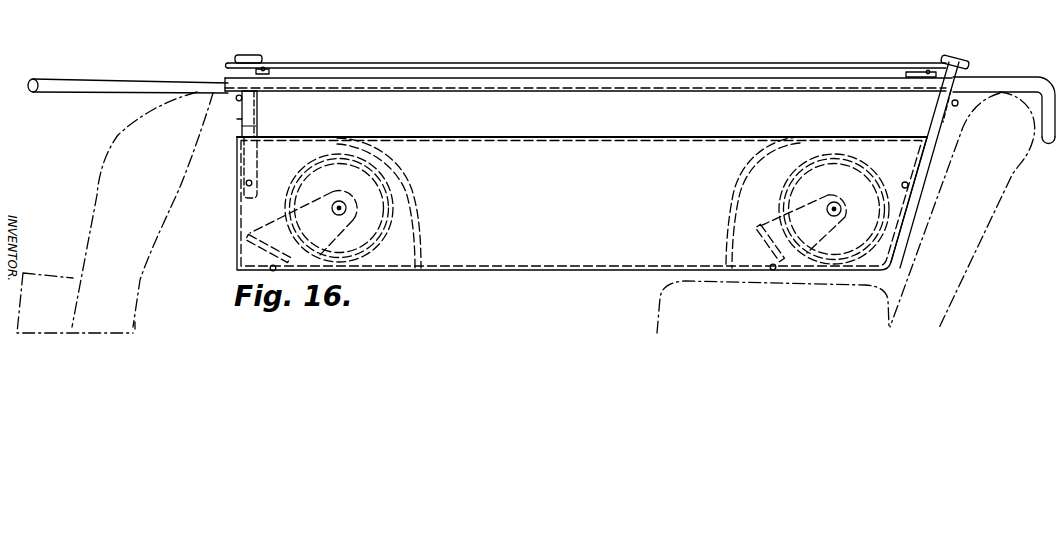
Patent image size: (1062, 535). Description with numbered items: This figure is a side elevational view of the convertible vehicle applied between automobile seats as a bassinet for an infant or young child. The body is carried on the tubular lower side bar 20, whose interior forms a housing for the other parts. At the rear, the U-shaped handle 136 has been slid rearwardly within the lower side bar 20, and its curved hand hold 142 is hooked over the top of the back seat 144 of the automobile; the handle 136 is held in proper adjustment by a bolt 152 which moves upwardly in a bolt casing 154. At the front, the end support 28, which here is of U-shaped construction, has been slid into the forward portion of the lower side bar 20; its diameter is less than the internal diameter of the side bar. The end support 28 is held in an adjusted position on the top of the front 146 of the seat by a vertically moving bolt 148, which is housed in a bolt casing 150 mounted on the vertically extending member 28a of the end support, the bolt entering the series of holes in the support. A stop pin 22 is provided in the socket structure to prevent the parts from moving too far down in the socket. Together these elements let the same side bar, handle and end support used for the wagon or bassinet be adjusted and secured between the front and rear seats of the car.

The lower side bar 20 is at (604, 90).
The end support 28 is at (97, 86).
The vertically extending member 28a is at (243, 126).
The vertically moving bolt 148 is at (236, 101).
The bolt casing 150 is at (242, 121).
The stop pin 22 is at (247, 185).
The front 146 is at (150, 226).
The U-shaped handle 136 is at (993, 76).
The bolt casing 154 is at (937, 108).
The bolt 152 is at (958, 106).
The curved hand hold 142 is at (1019, 170).
The back seat 144 is at (963, 230).